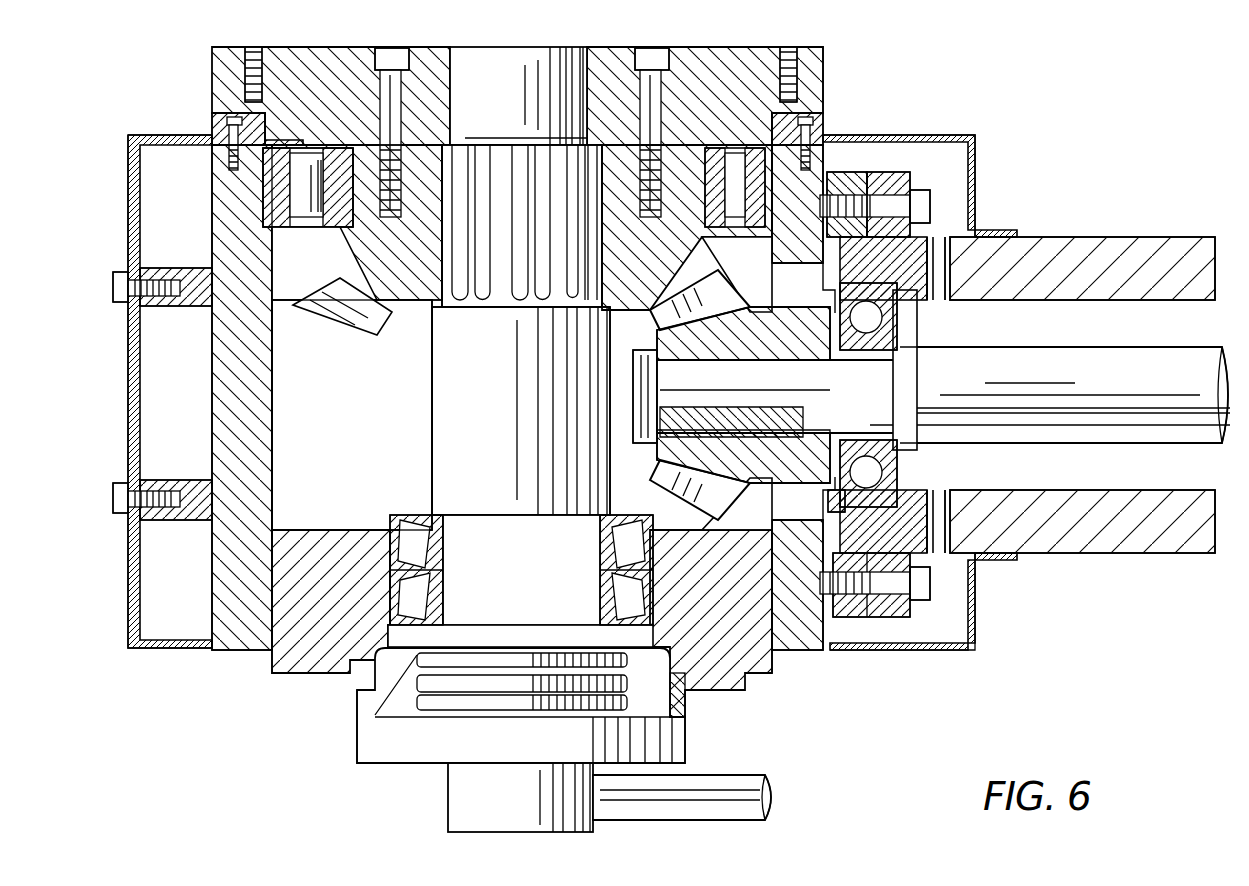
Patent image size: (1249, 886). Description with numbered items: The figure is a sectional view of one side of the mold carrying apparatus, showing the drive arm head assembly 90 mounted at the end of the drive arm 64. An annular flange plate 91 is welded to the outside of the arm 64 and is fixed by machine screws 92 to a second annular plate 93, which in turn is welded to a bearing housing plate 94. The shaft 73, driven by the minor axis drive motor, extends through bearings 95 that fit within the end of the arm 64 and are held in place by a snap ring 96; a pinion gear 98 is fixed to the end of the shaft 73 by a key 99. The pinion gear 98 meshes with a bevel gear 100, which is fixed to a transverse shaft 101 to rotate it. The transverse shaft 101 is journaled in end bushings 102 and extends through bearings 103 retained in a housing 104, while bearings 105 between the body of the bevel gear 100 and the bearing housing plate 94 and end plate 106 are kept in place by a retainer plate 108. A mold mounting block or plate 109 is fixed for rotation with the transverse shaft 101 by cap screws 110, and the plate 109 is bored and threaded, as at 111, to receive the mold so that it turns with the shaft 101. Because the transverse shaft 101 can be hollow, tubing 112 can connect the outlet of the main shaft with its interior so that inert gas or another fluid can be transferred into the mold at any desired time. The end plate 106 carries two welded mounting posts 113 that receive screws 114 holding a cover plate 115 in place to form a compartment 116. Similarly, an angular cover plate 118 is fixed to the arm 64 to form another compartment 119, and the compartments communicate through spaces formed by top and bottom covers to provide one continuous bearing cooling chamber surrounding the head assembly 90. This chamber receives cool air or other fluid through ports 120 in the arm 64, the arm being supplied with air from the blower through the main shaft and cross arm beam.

The drive arm 64 is at (1108, 245).
The shaft 73 is at (1132, 355).
The drive arm head assembly 90 is at (982, 128).
The annular flange plate 91 is at (895, 620).
The machine screws 92 is at (928, 205).
The second annular plate 93 is at (858, 178).
The bearing housing plate 94 is at (828, 170).
The bearings 95 is at (890, 470).
The snap ring 96 is at (835, 500).
The pinion gear 98 is at (705, 345).
The key 99 is at (660, 450).
The bevel gear 100 is at (410, 300).
The transverse shaft 101 is at (440, 396).
The end bushings 102 is at (357, 710).
The bearings 103 is at (450, 568).
The housing 104 is at (273, 670).
The bearings 105 is at (305, 212).
The end plate 106 is at (232, 385).
The retainer plate 108 is at (212, 125).
The mold mounting block or plate 109 is at (716, 60).
The cap screws 110 is at (392, 50).
The bored and threaded holes 111 is at (256, 50).
The tubing 112 is at (730, 778).
The mounting posts 113 is at (195, 307).
The screws 114 is at (115, 283).
The cover plate 115 is at (130, 382).
The compartment 116 is at (195, 587).
The angular cover plate 118 is at (1008, 230).
The compartment 119 is at (938, 630).
The ports 120 is at (940, 292).